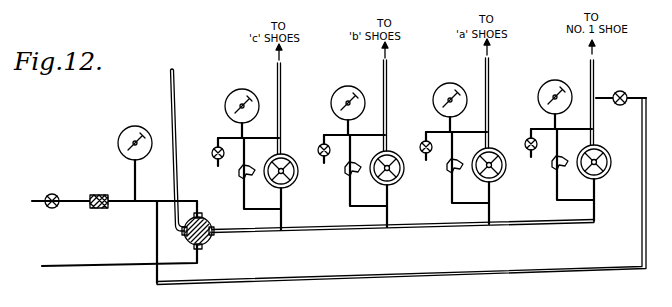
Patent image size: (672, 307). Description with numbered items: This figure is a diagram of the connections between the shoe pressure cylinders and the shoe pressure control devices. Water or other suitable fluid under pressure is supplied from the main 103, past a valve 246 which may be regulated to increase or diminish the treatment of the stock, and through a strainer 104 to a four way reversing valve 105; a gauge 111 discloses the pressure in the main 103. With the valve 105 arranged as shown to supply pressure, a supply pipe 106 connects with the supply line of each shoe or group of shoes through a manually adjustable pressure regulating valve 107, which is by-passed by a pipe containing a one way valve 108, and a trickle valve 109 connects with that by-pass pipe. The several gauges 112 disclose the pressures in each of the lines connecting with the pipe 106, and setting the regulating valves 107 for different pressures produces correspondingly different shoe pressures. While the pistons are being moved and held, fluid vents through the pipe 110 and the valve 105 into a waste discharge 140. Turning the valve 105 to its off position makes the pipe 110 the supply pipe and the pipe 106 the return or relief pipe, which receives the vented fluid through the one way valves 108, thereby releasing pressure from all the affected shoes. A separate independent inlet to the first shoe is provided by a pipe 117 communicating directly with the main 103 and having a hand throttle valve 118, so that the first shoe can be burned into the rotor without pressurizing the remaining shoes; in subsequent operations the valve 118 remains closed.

The main 103 is at (126, 203).
The strainer 104 is at (94, 209).
The four way reversing valve 105 is at (210, 243).
The supply pipe 106 is at (366, 230).
The pressure regulating valve 107 is at (451, 178).
The one way valve 108 is at (384, 176).
The trickle valve 109 is at (363, 137).
The pipe 110 is at (170, 88).
The gauge 111 is at (127, 129).
The gauge 112 is at (388, 99).
The pipe 117 is at (380, 278).
The hand throttle valve 118 is at (623, 92).
The waste discharge 140 is at (90, 267).
The valve 246 is at (53, 194).